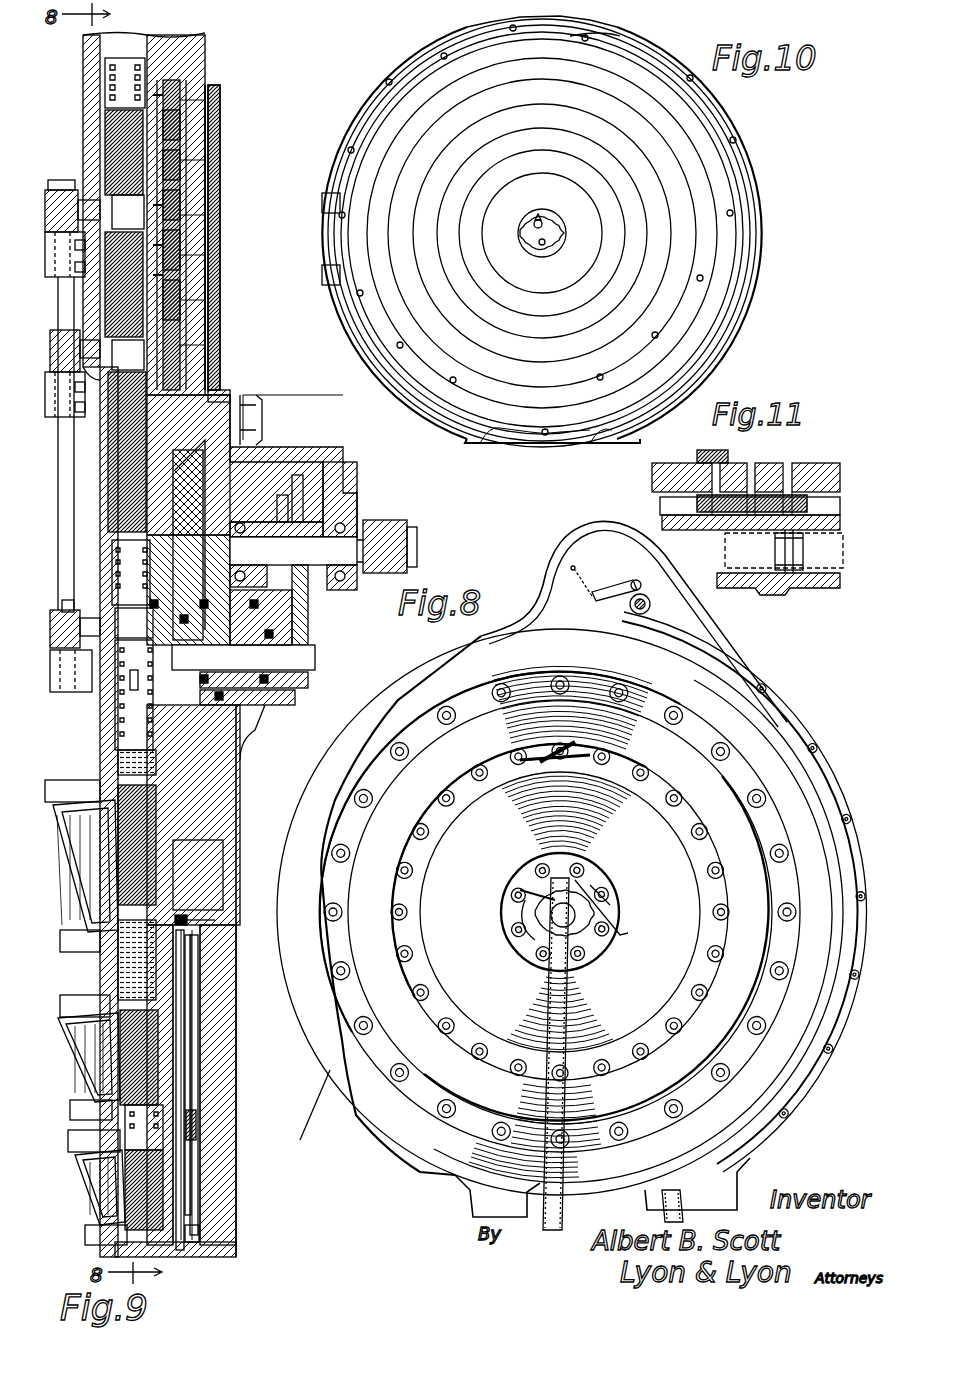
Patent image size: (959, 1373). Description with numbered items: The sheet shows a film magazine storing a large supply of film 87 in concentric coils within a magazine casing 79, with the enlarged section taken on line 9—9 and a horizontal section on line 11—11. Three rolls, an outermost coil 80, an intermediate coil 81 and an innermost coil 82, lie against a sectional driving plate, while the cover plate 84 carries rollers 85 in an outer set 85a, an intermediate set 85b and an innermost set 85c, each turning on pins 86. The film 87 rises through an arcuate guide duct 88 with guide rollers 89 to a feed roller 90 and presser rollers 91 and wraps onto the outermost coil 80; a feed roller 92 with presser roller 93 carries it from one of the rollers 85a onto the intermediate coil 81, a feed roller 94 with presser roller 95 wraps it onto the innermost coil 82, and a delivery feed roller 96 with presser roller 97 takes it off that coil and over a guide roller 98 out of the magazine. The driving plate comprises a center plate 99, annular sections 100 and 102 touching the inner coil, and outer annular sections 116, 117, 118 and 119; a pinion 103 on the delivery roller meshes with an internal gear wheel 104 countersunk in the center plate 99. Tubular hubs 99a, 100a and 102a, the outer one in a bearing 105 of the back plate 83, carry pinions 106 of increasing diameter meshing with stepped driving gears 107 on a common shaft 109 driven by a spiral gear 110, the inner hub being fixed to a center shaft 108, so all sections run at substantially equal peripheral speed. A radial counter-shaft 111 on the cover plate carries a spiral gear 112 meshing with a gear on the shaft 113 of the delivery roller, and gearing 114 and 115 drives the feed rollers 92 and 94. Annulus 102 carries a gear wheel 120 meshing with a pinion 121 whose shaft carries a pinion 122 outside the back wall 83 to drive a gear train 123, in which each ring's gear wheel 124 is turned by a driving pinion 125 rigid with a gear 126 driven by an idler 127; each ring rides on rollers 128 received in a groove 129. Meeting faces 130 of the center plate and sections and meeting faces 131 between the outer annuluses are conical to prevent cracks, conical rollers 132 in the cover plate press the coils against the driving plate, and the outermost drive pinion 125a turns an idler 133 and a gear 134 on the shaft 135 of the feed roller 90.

In FIG. 8, the section line 9 is at (650, 580).
In FIG. 8, the section line 11 is at (560, 600).
In FIG. 9, the magazine casing 79 is at (246, 1126).
In FIG. 10, the magazine casing 79 is at (766, 184).
In FIG. 8, the magazine casing 79 is at (398, 671).
In FIG. 9, the outermost coil 80 is at (122, 1188).
In FIG. 8, the outermost coil 80 is at (805, 795).
In FIG. 9, the intermediate coil 81 is at (118, 1052).
In FIG. 8, the intermediate coil 81 is at (748, 838).
In FIG. 9, the innermost coil 82 is at (118, 840).
In FIG. 8, the innermost coil 82 is at (680, 866).
In FIG. 9, the back plate 83 is at (232, 778).
In FIG. 9, the cover plate 84 is at (102, 716).
In FIG. 8, the cover plate 84 is at (319, 1105).
In FIG. 8, the rollers 85 is at (740, 690).
In FIG. 8, the outer set of rollers 85a is at (470, 700).
In FIG. 8, the intermediate set of rollers 85b is at (445, 830).
In FIG. 8, the innermost set of rollers 85c is at (560, 912).
In FIG. 8, the pins 86 is at (461, 915).
In FIG. 11, the film 87 is at (725, 548).
In FIG. 8, the film 87 is at (548, 1232).
In FIG. 10, the arcuate guide duct 88 is at (742, 140).
In FIG. 8, the arcuate guide duct 88 is at (738, 636).
In FIG. 8, the guide rollers 89 is at (770, 690).
In FIG. 8, the feed roller 90 is at (657, 596).
In FIG. 8, the presser rollers 91 is at (634, 578).
In FIG. 9, the feed roller 92 is at (125, 143).
In FIG. 8, the feed roller 92 is at (598, 688).
In FIG. 8, the presser roller 93 is at (540, 760).
In FIG. 9, the feed roller 94 is at (125, 382).
In FIG. 8, the feed roller 94 is at (573, 765).
In FIG. 8, the presser roller 95 is at (565, 750).
In FIG. 9, the delivery feed roller 96 is at (134, 623).
In FIG. 8, the delivery feed roller 96 is at (601, 902).
In FIG. 9, the presser roller 97 is at (133, 602).
In FIG. 8, the presser roller 97 is at (521, 916).
In FIG. 8, the guide roller 98 is at (560, 912).
In FIG. 9, the center plate 99 is at (165, 738).
In FIG. 10, the center plate 99 is at (542, 245).
In FIG. 9, the tubular hub 99a is at (194, 658).
In FIG. 9, the annular section 100 is at (185, 845).
In FIG. 10, the annular section 100 is at (542, 243).
In FIG. 9, the tubular hub 100a is at (234, 658).
In FIG. 9, the annular section 102 is at (205, 896).
In FIG. 10, the annular section 102 is at (542, 243).
In FIG. 9, the tubular hub 102a is at (281, 658).
In FIG. 9, the pinion 103 is at (160, 648).
In FIG. 10, the pinion 103 is at (537, 220).
In FIG. 9, the internal gear wheel 104 is at (162, 676).
In FIG. 10, the internal gear wheel 104 is at (556, 230).
In FIG. 9, the bearing 105 is at (297, 700).
In FIG. 9, the pinions 106 is at (310, 686).
In FIG. 9, the stepped driving gears 107 is at (284, 488).
In FIG. 9, the center shaft 108 is at (316, 658).
In FIG. 9, the common shaft 109 is at (340, 540).
In FIG. 9, the spiral gear 110 is at (395, 522).
In FIG. 9, the counter-shaft 111 is at (62, 488).
In FIG. 9, the spiral gear 112 is at (60, 608).
In FIG. 9, the shaft 113 is at (52, 634).
In FIG. 9, the gearing 114 is at (46, 200).
In FIG. 9, the gearing 115 is at (52, 348).
In FIG. 9, the annular section 116 is at (185, 952).
In FIG. 10, the annular section 116 is at (542, 244).
In FIG. 9, the annular section 117 is at (195, 1050).
In FIG. 10, the annular section 117 is at (542, 244).
In FIG. 9, the annular section 118 is at (196, 1165).
In FIG. 10, the annular section 118 is at (542, 243).
In FIG. 9, the annular section 119 is at (200, 1222).
In FIG. 10, the annular section 119 is at (542, 242).
In FIG. 9, the gear wheel 120 is at (215, 920).
In FIG. 9, the pinion 121 is at (232, 396).
In FIG. 9, the pinion 122 is at (222, 378).
In FIG. 9, the gear train 123 is at (231, 237).
In FIG. 9, the gear wheel 124 is at (182, 300).
In FIG. 9, the driving pinion 125 is at (183, 282).
In FIG. 11, the outermost drive pinion 125a is at (710, 450).
In FIG. 9, the gear 126 is at (240, 290).
In FIG. 9, the idler 127 is at (225, 246).
In FIG. 9, the roller 128 is at (178, 330).
In FIG. 9, the groove 129 is at (183, 350).
In FIG. 9, the meeting faces 130 is at (262, 410).
In FIG. 10, the meeting faces 130 is at (622, 255).
In FIG. 9, the meeting faces 131 is at (180, 1030).
In FIG. 10, the meeting faces 131 is at (492, 368).
In FIG. 9, the conical rollers 132 is at (85, 900).
In FIG. 11, the idler 133 is at (757, 463).
In FIG. 11, the gear 134 is at (818, 463).
In FIG. 11, the shaft 135 is at (788, 463).